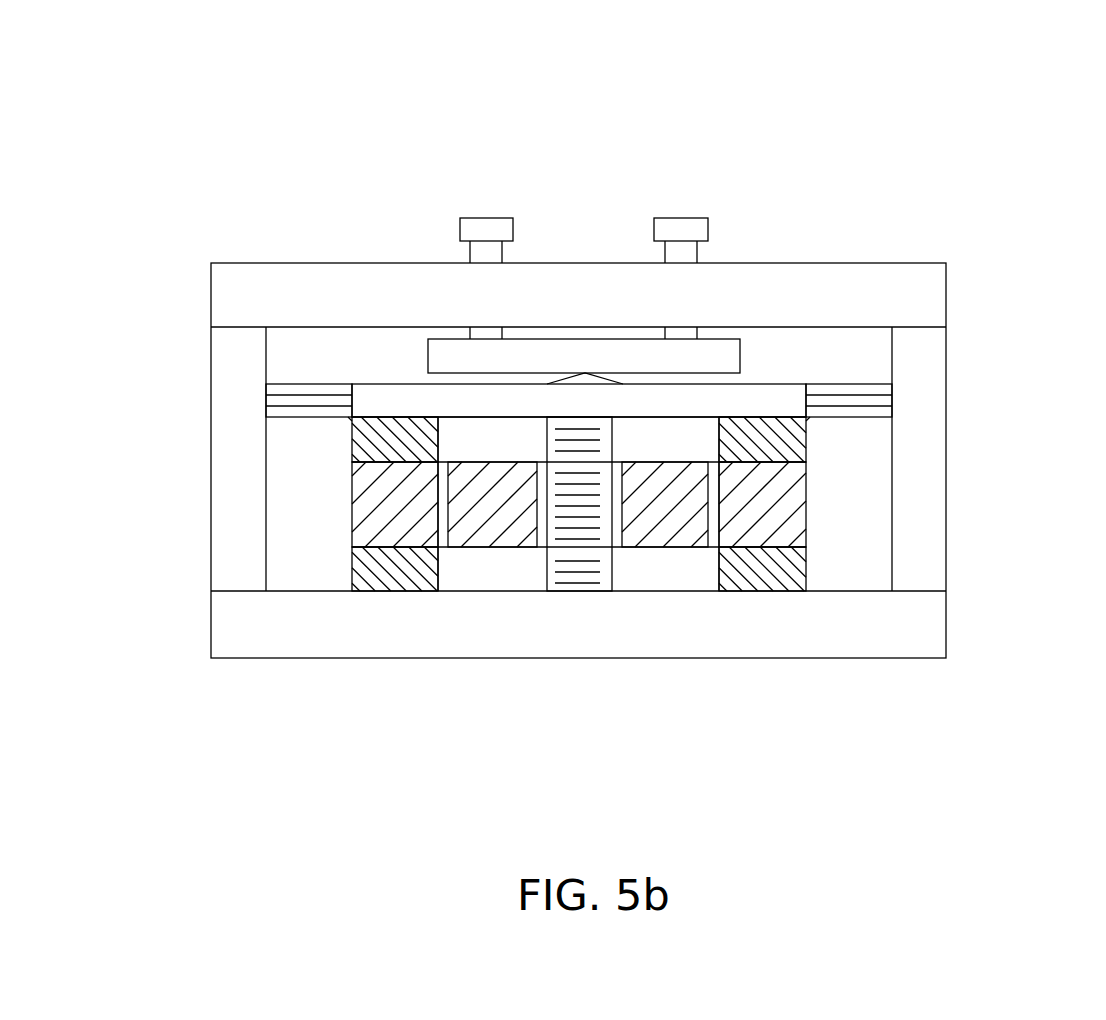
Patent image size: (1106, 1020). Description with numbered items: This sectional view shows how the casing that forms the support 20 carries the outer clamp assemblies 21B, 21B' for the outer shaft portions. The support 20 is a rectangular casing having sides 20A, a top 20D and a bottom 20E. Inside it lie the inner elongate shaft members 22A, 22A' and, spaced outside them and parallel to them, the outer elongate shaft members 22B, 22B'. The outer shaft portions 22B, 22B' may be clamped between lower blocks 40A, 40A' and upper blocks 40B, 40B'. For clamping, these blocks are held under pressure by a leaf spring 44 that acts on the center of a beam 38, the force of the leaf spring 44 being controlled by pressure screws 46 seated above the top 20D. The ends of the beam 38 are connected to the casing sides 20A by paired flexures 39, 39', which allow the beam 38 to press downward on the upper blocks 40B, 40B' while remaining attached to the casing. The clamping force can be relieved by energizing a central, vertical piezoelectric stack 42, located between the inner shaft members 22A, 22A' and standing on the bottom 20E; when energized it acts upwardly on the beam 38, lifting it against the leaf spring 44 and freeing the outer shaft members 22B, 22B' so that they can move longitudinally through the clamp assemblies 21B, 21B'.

The support 20 is at (210, 252).
The sides 20A is at (233, 504).
The top 20D is at (837, 297).
The bottom 20E is at (870, 613).
The outer clamp assembly 21B is at (278, 282).
The outer clamp assembly 21B' is at (953, 374).
The inner elongate shaft member 22A is at (456, 616).
The inner elongate shaft member 22A' is at (683, 616).
The outer elongate shaft member 22B is at (255, 550).
The outer elongate shaft member 22B' is at (910, 520).
The beam 38 is at (752, 407).
The flexure 39 is at (217, 350).
The flexure 39' is at (949, 307).
The lower block 40A is at (331, 658).
The lower block 40A' is at (817, 658).
The upper block 40B is at (255, 451).
The upper block 40B' is at (910, 429).
The piezoelectric stack 42 is at (577, 562).
The leaf spring 44 is at (470, 362).
The pressure screws 46 is at (493, 228).